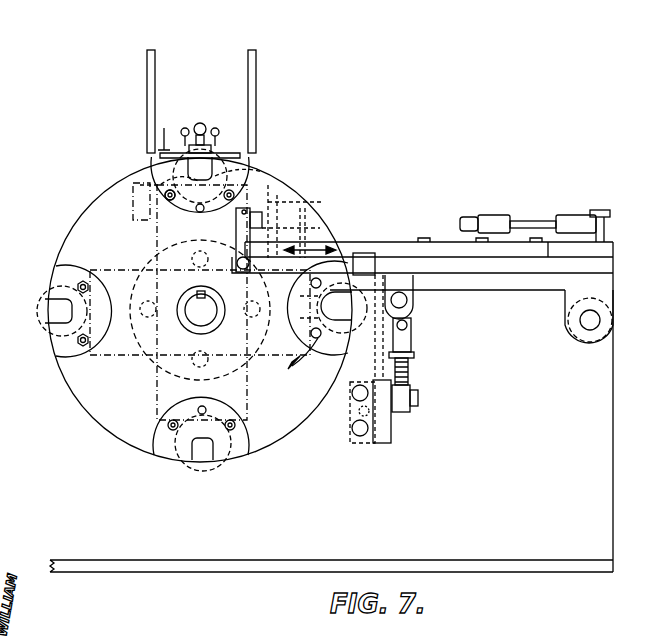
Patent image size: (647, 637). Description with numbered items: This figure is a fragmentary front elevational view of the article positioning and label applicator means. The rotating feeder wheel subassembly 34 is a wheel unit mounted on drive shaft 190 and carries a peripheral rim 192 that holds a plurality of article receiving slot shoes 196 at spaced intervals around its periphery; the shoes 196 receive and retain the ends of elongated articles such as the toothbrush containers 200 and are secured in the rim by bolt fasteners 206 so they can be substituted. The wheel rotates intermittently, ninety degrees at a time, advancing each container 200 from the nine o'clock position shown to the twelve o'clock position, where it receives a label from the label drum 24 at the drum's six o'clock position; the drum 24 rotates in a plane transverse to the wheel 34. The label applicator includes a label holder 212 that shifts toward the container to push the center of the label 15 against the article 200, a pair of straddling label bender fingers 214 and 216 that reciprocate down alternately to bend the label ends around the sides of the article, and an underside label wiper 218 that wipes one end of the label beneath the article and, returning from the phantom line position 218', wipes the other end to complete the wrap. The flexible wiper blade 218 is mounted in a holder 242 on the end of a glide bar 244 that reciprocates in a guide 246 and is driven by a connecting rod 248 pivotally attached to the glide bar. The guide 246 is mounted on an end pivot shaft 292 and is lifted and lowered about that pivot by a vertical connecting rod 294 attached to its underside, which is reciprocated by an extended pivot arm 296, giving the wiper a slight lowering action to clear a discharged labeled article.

The rotating feeder wheel subassembly 34 is at (66, 381).
The slot shoes 196 is at (240, 172).
The toothbrush containers 200 is at (190, 180).
The bolt fasteners 206 is at (167, 191).
The label drum 24 is at (256, 99).
The bracket 15 is at (166, 132).
The label holder 212 is at (200, 122).
The label bender finger 216 is at (185, 127).
The label bender finger 214 is at (216, 128).
The phantom line position of wiper 218' is at (131, 185).
The underside label wiper 218 is at (267, 162).
The peripheral rim 192 is at (286, 190).
The holder 242 is at (236, 222).
The glide bar 244 is at (308, 246).
The guide 246 is at (500, 268).
The connecting rod 248 is at (524, 222).
The end pivot shaft 292 is at (590, 326).
The vertical connecting rod 294 is at (409, 346).
The extended pivot arm 296 is at (390, 428).
The drive shaft 190 is at (201, 310).